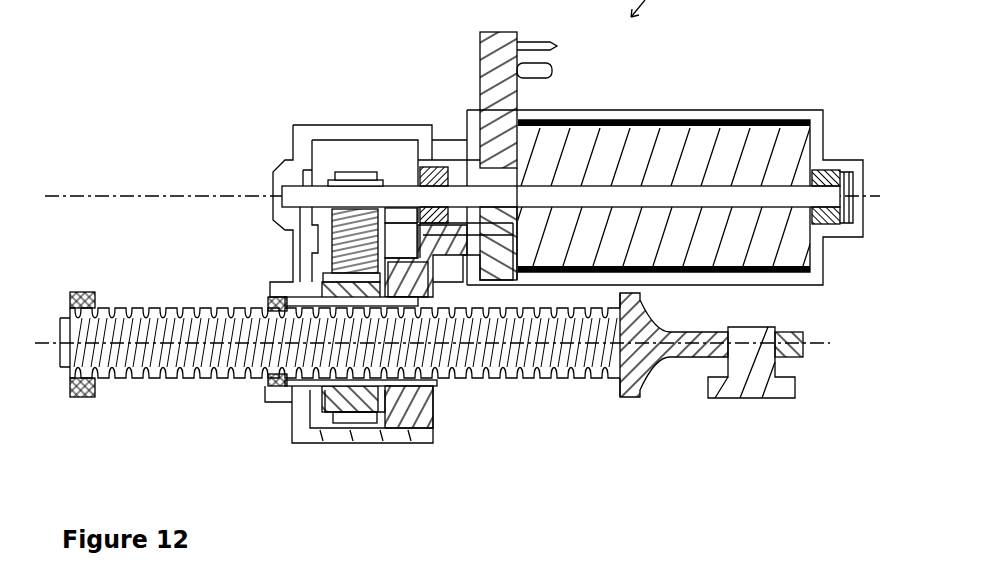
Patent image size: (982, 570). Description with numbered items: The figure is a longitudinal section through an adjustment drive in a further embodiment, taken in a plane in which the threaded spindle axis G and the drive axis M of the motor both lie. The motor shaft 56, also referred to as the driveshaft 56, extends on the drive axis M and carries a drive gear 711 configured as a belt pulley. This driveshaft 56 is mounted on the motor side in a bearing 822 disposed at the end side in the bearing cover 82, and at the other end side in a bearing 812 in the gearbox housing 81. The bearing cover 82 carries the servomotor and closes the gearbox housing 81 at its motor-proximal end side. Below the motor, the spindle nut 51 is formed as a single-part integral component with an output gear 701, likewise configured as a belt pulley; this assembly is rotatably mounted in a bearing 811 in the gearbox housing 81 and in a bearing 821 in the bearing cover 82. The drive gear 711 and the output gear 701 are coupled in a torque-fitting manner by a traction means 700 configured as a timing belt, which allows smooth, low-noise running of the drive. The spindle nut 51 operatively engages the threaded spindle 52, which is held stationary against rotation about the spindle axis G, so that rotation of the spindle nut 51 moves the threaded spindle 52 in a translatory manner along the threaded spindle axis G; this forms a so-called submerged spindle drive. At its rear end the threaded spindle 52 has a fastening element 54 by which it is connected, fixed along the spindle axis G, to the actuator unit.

The drive axis M is at (52, 190).
The threaded spindle axis G is at (818, 346).
The motor shaft 56 is at (296, 176).
The bearing 822 is at (442, 166).
The bearing 812 is at (293, 176).
The traction means 700 is at (372, 172).
The drive gear 711 is at (343, 170).
The output gear 701 is at (337, 285).
The bearing 811 is at (290, 396).
The spindle nut 51 is at (268, 298).
The gearbox housing 81 is at (300, 433).
The bearing 821 is at (410, 395).
The bearing cover 82 is at (433, 405).
The threaded spindle 52 is at (572, 372).
The fastening element 54 is at (765, 384).